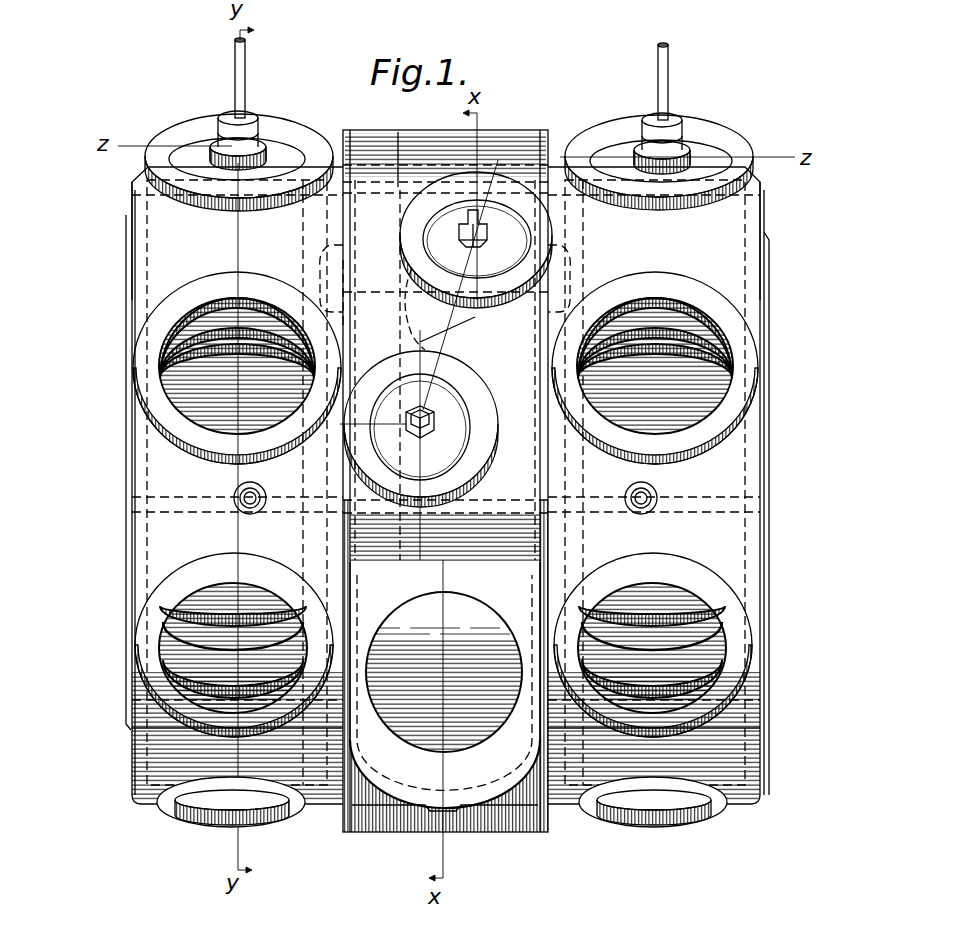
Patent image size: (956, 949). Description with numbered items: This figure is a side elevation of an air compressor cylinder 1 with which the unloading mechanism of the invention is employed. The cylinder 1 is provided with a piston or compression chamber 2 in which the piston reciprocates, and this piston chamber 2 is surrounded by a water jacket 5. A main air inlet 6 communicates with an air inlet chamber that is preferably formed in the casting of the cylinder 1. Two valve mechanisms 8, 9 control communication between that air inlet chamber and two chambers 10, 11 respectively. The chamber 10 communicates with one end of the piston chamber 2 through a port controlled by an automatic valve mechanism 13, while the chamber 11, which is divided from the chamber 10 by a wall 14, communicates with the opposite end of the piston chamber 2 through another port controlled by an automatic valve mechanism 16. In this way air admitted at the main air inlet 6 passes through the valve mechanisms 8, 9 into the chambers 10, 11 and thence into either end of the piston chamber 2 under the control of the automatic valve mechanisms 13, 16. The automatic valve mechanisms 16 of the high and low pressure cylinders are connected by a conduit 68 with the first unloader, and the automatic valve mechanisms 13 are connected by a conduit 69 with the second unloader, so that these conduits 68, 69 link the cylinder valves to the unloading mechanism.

The cylinder 1 is at (458, 481).
The piston or compression chamber 2 is at (445, 504).
The water jacket 5 is at (360, 294).
The main air inlet 6 is at (466, 612).
The valve mechanism 8 is at (419, 429).
The valve mechanism 9 is at (476, 240).
The chamber 10 is at (146, 220).
The chamber 11 is at (748, 230).
The automatic valve mechanism 13 is at (290, 132).
The wall 14 is at (400, 323).
The automatic valve mechanism 16 is at (720, 140).
The conduit 68 is at (658, 66).
The conduit 69 is at (245, 84).